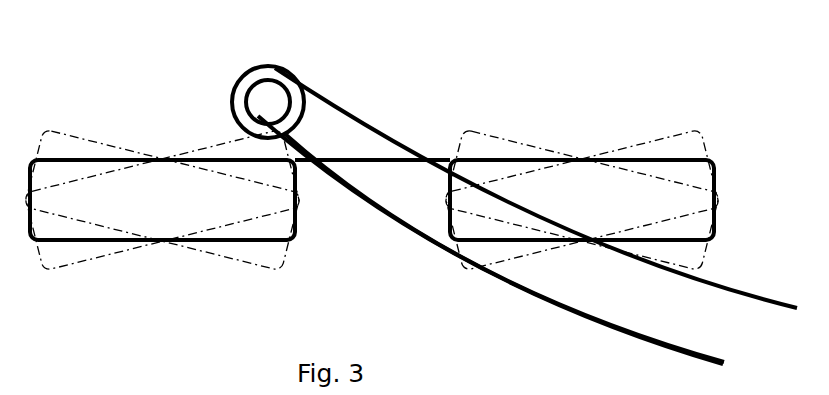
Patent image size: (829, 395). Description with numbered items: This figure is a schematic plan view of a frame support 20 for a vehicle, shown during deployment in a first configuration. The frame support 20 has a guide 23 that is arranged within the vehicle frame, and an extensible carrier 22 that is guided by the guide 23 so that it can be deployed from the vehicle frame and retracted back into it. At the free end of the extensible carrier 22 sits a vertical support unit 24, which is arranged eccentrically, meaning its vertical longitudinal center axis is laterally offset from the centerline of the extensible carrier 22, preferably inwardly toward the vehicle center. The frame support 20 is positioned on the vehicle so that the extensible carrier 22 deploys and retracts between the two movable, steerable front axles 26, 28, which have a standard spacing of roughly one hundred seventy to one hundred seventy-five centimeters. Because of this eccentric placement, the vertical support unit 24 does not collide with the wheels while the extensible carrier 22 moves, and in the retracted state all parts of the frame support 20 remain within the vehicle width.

The frame support 20 is at (472, 79).
The extensible carrier 22 is at (411, 207).
The guide 23 is at (628, 313).
The vertical support unit 24 is at (272, 100).
The front axle 26 is at (155, 241).
The front axle 28 is at (585, 159).